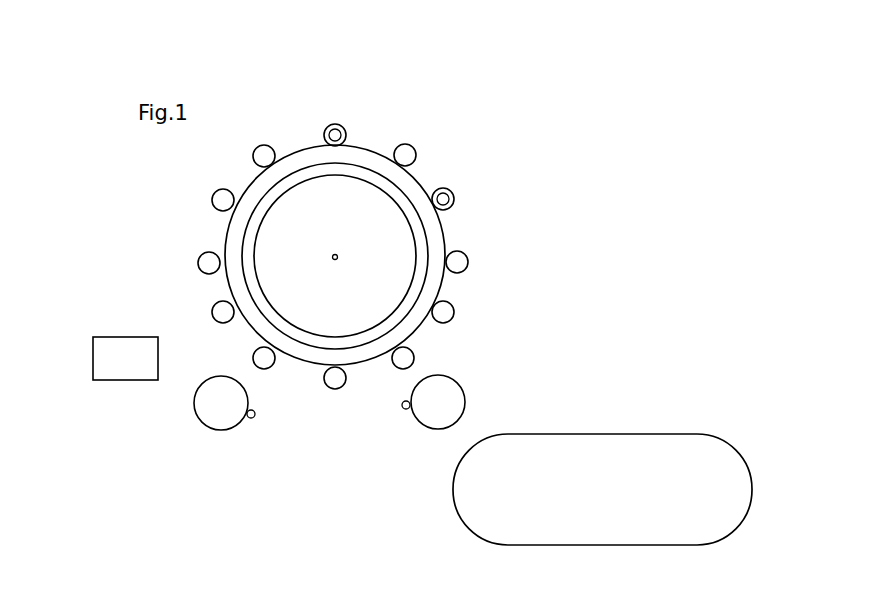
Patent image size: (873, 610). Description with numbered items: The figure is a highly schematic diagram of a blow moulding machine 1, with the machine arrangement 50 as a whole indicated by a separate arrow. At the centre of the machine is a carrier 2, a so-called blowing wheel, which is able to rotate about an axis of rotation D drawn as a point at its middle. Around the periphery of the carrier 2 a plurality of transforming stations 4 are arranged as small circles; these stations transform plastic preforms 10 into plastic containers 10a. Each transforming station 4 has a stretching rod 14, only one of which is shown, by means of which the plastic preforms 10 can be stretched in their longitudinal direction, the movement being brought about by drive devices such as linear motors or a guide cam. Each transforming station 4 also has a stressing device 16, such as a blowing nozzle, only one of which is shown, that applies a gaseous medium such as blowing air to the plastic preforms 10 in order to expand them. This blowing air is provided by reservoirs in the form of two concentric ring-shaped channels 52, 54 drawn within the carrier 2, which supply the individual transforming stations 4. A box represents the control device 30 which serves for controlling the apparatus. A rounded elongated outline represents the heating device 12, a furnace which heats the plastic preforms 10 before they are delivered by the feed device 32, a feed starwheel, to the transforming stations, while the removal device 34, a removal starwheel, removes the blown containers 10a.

The blow moulding machine 1 is at (531, 236).
The carrier 2 is at (365, 224).
The transforming stations 4 is at (443, 309).
The plastic preforms 10 is at (404, 412).
The plastic containers 10a is at (249, 420).
The heating device 12 is at (673, 452).
The stretching rods 14 is at (448, 199).
The stressing devices 16 is at (341, 137).
The control device 30 is at (125, 358).
The feed device 32 is at (438, 402).
The removal device 34 is at (221, 403).
The machine arrangement 50 is at (598, 304).
The ring-shaped channel 52 is at (253, 253).
The ring-shaped channel 54 is at (260, 203).
The axis of rotation D is at (332, 259).